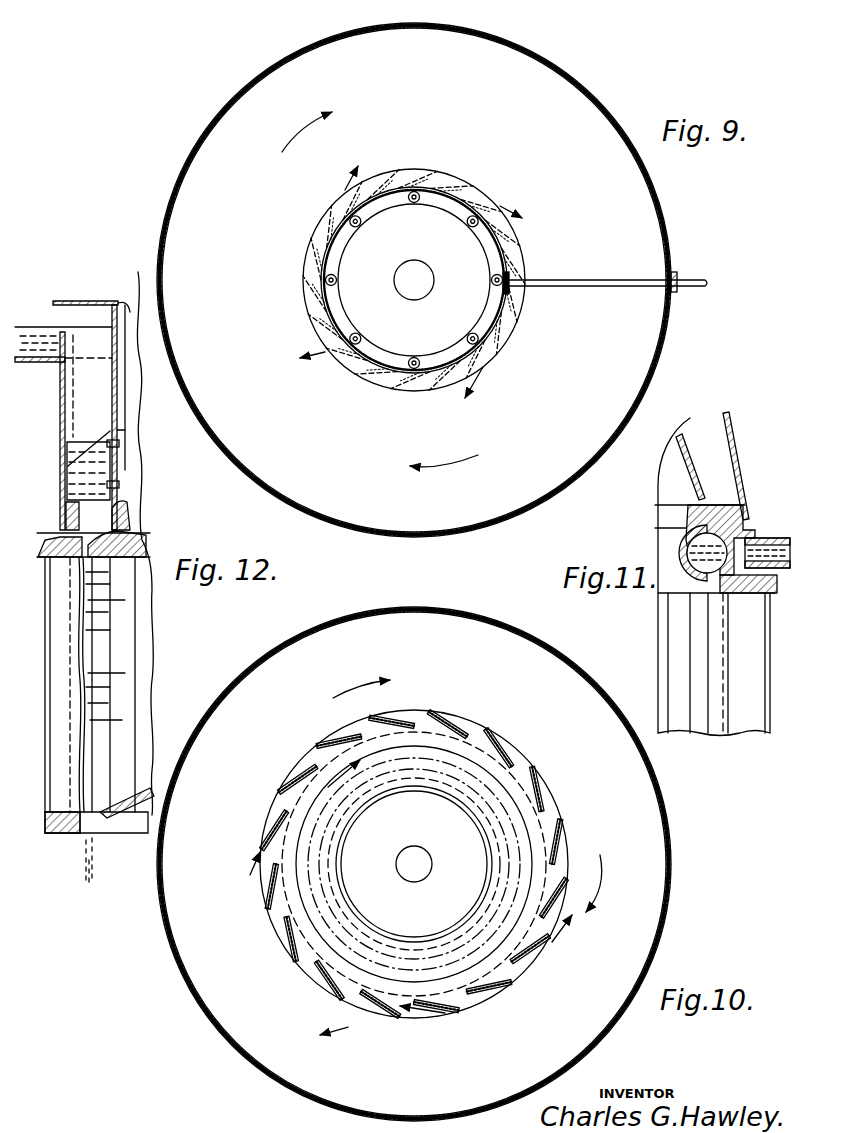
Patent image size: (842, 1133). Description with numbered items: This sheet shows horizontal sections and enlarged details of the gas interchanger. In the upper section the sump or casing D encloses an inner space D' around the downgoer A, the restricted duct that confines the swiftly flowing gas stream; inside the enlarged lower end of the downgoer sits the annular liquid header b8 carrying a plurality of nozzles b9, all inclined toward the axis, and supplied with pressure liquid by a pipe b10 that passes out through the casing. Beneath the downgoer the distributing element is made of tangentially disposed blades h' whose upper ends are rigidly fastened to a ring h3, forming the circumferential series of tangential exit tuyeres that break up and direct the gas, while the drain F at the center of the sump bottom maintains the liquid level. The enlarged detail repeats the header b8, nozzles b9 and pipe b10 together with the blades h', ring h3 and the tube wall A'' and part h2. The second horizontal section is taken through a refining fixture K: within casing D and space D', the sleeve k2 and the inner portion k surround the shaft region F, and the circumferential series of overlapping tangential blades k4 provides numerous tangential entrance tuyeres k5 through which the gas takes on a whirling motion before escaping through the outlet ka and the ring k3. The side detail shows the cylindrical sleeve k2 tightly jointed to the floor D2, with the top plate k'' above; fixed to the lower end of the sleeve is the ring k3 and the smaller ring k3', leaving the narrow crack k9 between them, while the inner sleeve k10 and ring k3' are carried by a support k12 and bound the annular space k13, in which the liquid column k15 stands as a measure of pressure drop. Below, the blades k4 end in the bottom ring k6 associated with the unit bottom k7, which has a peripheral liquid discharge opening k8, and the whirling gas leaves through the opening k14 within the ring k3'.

In FIG. 9, the sump or casing D is at (414, 280).
In FIG. 10, the sump or casing D is at (414, 864).
In FIG. 9, the casing chamber D' is at (414, 280).
In FIG. 10, the casing chamber D' is at (414, 864).
In FIG. 12, the floor D2 is at (40, 320).
In FIG. 9, the drain F is at (414, 280).
In FIG. 10, the drain F is at (432, 873).
In FIG. 10, the downgoer A is at (414, 864).
In FIG. 9, the rotor hub / tube A'' is at (410, 280).
In FIG. 11, the rotor hub / tube A'' is at (727, 466).
In FIG. 9, the tangential blades h' is at (435, 276).
In FIG. 11, the tangential blades h' is at (730, 664).
In FIG. 9, the vane ring h2 is at (478, 186).
In FIG. 9, the top ring h3 is at (521, 254).
In FIG. 11, the top ring h3 is at (773, 594).
In FIG. 9, the annular liquid header b8 is at (498, 312).
In FIG. 11, the annular liquid header b8 is at (688, 541).
In FIG. 9, the nozzles b9 is at (367, 341).
In FIG. 11, the nozzles b9 is at (706, 506).
In FIG. 9, the pipe b10 is at (617, 283).
In FIG. 11, the pipe b10 is at (773, 537).
In FIG. 10, the impeller ring k is at (414, 859).
In FIG. 12, the fixture K is at (102, 685).
In FIG. 12, the top plate k'' is at (85, 284).
In FIG. 12, the outlet passage ka is at (128, 303).
In FIG. 12, the cylindrical sleeve k2 is at (60, 410).
In FIG. 10, the ring k3 is at (414, 864).
In FIG. 12, the ring k3 is at (47, 539).
In FIG. 12, the smaller ring k3' is at (114, 521).
In FIG. 10, the tangential blades k4 is at (498, 746).
In FIG. 12, the tangential blades k4 is at (48, 618).
In FIG. 10, the tangential entrance tuyeres k5 is at (470, 723).
In FIG. 10, the bottom ring k6 is at (567, 842).
In FIG. 12, the bottom ring k6 is at (45, 826).
In FIG. 12, the unit bottom k7 is at (152, 788).
In FIG. 12, the liquid discharge opening k8 is at (95, 818).
In FIG. 12, the opening or crack k9 is at (125, 522).
In FIG. 12, the inner sleeve k10 is at (125, 436).
In FIG. 12, the support k12 is at (95, 455).
In FIG. 12, the annular space k13 is at (92, 386).
In FIG. 12, the opening k14 is at (146, 552).
In FIG. 12, the pressure-drop compensating column k15 is at (68, 485).